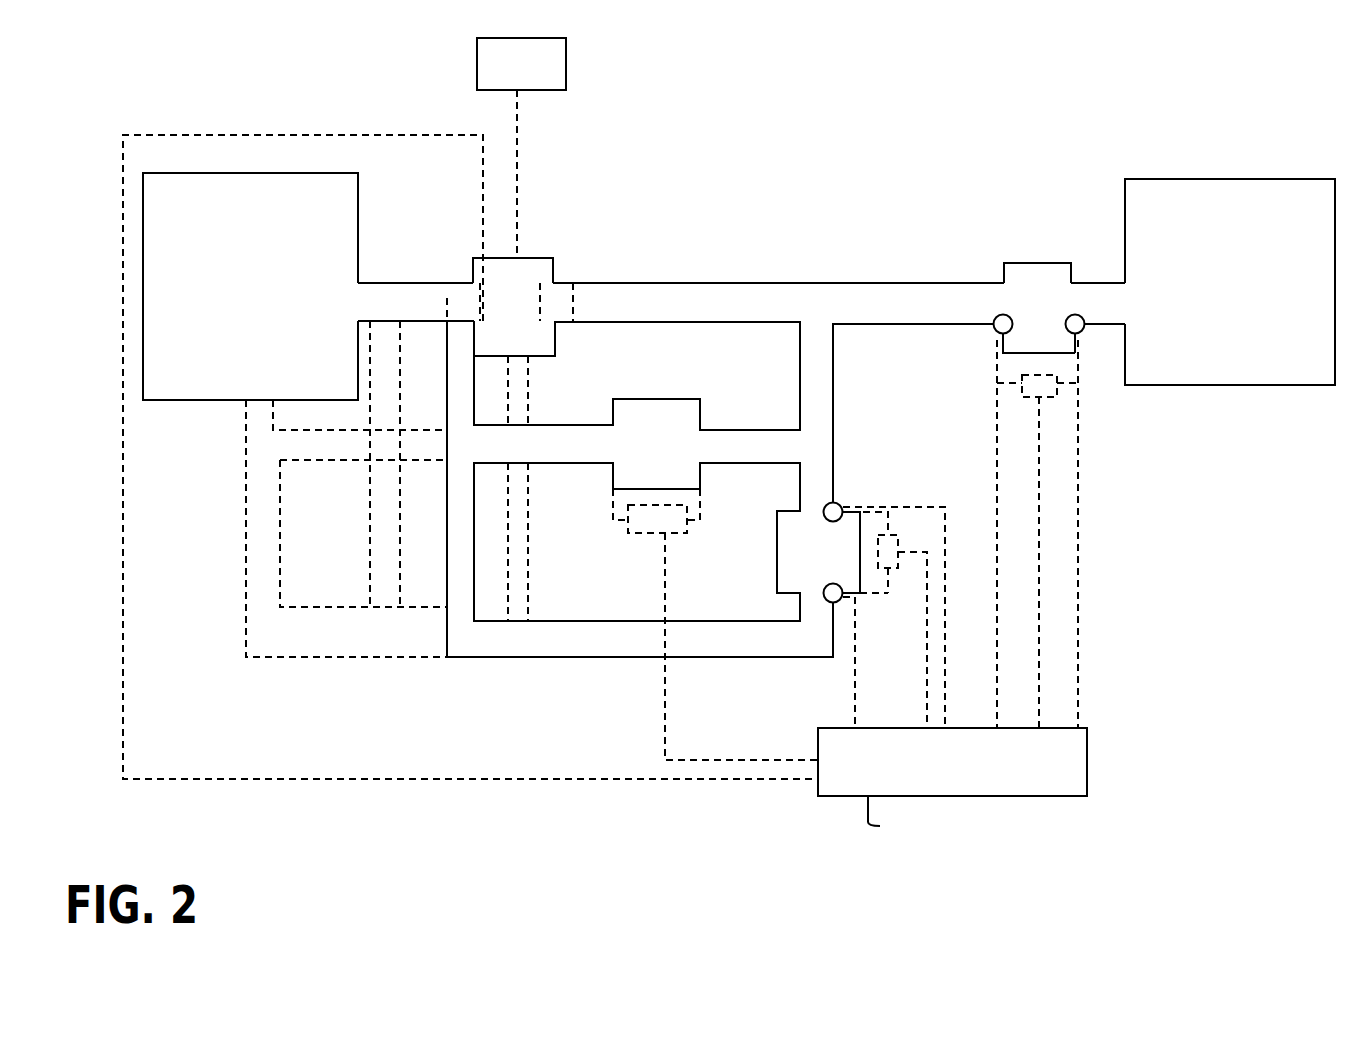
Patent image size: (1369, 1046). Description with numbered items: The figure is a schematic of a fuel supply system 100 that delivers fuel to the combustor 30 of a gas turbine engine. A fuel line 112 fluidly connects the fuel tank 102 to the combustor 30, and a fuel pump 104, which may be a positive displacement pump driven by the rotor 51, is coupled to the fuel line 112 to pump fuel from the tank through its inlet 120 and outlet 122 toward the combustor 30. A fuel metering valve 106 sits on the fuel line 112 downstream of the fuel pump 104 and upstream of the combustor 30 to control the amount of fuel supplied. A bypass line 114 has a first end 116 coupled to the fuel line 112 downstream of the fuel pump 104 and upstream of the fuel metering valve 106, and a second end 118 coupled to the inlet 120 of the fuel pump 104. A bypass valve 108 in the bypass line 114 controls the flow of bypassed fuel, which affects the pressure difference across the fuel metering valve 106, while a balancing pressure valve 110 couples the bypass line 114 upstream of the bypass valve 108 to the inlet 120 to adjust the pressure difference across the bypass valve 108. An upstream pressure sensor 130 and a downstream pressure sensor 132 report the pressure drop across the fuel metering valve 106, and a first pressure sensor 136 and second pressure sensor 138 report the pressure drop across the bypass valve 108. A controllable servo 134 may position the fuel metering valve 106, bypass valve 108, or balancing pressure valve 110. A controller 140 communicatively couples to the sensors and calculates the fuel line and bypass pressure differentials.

The combustor 30 is at (1244, 274).
The rotor 51 is at (567, 60).
The fuel supply system 100 is at (740, 226).
The fuel tank 102 is at (277, 288).
The fuel pump 104 is at (547, 254).
The fuel metering valve (FMV) 106 is at (1002, 260).
The bypass valve (BV) 108 is at (774, 548).
The balancing pressure valve (BPV) 110 is at (651, 396).
The fuel line 112 is at (812, 281).
The bypass line 114 is at (553, 664).
The first end 116 is at (837, 327).
The second end 118 is at (445, 324).
The inlet 120 is at (445, 291).
The outlet 122 is at (577, 302).
The upstream pressure sensor 130 is at (995, 331).
The downstream pressure sensor 132 is at (1083, 333).
The controllable servo 134 is at (1056, 399).
The first pressure sensor 136 is at (841, 504).
The second pressure sensor 138 is at (834, 606).
The controller 140 is at (971, 776).